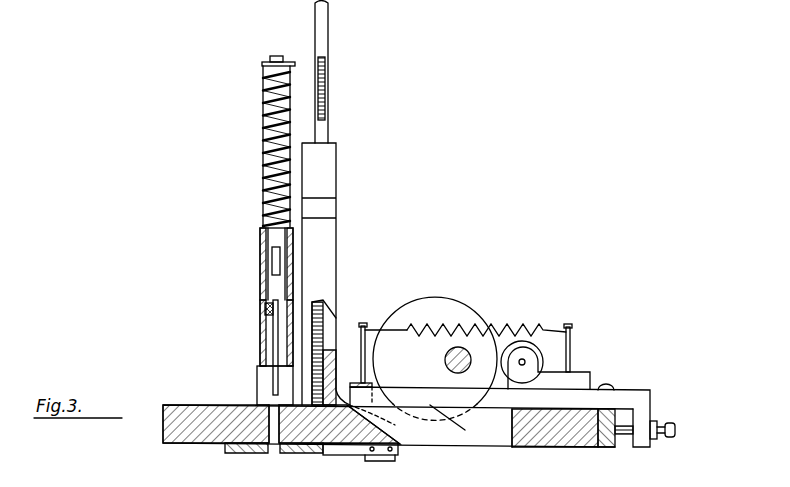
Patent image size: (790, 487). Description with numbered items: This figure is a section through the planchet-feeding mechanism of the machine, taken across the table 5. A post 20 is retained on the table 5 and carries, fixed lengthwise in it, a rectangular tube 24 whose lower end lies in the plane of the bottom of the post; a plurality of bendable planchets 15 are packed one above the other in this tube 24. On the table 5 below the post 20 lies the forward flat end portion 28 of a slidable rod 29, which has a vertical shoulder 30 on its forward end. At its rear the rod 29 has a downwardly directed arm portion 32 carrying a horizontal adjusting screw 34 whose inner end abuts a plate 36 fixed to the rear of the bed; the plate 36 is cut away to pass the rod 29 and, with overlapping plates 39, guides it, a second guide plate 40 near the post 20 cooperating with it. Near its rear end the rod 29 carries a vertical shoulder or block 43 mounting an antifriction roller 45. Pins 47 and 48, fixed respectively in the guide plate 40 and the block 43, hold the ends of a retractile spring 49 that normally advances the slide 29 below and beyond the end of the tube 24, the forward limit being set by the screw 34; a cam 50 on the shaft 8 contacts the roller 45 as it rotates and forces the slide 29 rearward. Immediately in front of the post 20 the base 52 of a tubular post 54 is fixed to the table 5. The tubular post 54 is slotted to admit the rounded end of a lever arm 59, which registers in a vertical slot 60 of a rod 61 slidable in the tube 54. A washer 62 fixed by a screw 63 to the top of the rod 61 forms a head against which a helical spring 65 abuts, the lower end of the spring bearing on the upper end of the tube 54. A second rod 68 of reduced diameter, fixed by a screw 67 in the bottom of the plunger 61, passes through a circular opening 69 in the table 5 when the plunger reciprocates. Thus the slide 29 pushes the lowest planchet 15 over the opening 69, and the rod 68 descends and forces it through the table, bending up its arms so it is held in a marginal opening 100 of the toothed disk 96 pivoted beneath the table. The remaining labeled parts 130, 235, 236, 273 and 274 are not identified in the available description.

The table 5 is at (175, 436).
The shaft 8 is at (445, 360).
The planchet 15 is at (318, 342).
The post 20 is at (332, 228).
The rectangular tube 24 is at (324, 42).
The forward flat end portion 28 is at (283, 400).
The slidable rod 29 is at (452, 405).
The vertical shoulder 30 is at (392, 420).
The downwardly directed arm portion 32 is at (645, 440).
The horizontal adjusting screw 34 is at (676, 430).
The plate 36 is at (606, 447).
The overlapping plates 39 is at (608, 386).
The second guide plate 40 is at (362, 386).
The vertical shoulder or block 43 is at (582, 382).
The antifriction roller 45 is at (569, 325).
The pin 47 is at (366, 326).
The pin 48 is at (572, 348).
The retractile spring 49 is at (530, 324).
The cam 50 is at (434, 300).
The base 52 is at (257, 370).
The tubular post 54 is at (260, 287).
The lever arm 59 is at (280, 259).
The vertical slot 60 is at (268, 250).
The rod 61 is at (262, 125).
The washer 62 is at (266, 62).
The screw 63 is at (280, 56).
The helical spring 65 is at (262, 88).
The screw 67 is at (266, 313).
The second rod 68 is at (273, 346).
The circular opening 69 is at (268, 430).
The disk 96 is at (326, 452).
The marginal opening 100 is at (268, 450).
The lug 130 is at (378, 463).
The member 235 is at (550, 478).
The member 236 is at (450, 478).
The member 273 is at (498, 482).
The member 274 is at (472, 482).